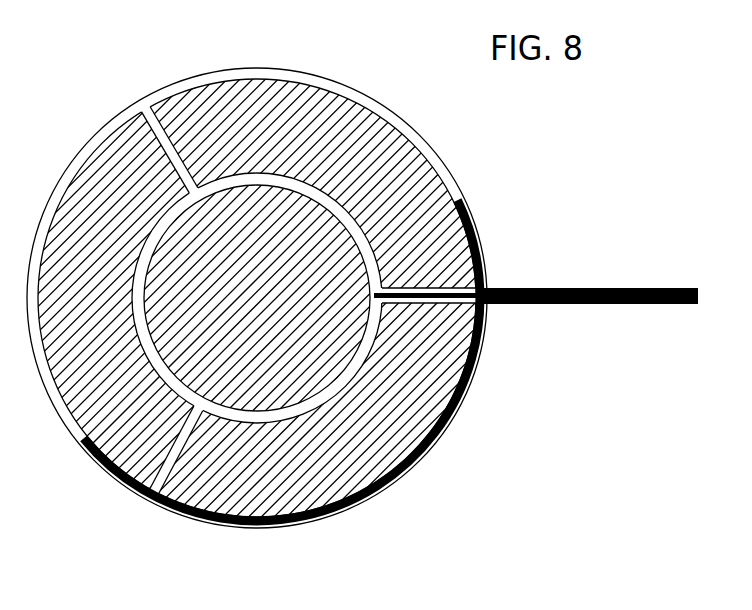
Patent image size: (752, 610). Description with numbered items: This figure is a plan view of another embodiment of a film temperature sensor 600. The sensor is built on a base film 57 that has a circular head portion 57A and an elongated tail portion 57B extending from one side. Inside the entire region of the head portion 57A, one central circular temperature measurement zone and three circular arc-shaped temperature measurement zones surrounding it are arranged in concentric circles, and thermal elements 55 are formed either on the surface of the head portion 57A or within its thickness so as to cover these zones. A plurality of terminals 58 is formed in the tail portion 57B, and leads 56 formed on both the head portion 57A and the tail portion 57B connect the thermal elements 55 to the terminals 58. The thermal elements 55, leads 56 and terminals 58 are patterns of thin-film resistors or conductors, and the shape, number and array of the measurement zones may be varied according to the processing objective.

The film temperature sensor 600 is at (463, 142).
The thermal element 55 is at (238, 185).
The lead 56 is at (548, 292).
The base film 57 is at (90, 136).
The head portion 57A is at (462, 522).
The tail portion 57B is at (698, 322).
The terminal 58 is at (679, 287).